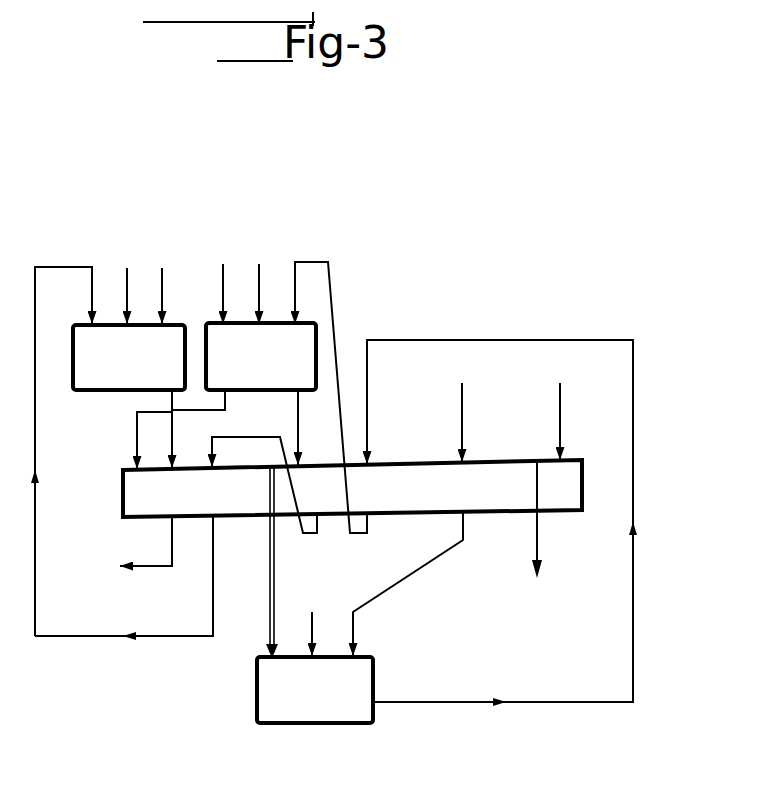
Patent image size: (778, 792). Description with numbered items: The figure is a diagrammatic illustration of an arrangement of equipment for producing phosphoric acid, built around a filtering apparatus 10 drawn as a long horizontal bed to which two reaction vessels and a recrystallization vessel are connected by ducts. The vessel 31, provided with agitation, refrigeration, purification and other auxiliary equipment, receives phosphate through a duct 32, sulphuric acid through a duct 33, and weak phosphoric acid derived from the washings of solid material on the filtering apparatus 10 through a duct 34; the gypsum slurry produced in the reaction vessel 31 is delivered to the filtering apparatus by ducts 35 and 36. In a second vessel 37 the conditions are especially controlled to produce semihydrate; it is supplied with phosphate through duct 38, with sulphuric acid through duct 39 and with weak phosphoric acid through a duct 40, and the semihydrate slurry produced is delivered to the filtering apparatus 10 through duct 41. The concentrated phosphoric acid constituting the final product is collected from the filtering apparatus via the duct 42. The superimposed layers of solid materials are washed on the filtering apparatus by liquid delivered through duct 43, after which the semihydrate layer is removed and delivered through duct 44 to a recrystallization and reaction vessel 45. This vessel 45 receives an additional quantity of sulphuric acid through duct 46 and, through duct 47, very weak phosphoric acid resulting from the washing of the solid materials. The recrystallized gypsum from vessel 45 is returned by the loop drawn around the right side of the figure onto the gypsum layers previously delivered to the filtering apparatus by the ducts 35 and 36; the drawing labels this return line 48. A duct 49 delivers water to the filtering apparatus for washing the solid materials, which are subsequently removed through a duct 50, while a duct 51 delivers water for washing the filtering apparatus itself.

The filtering apparatus 10 is at (123, 497).
The vessel 31 is at (278, 368).
The duct 32 is at (223, 272).
The duct 33 is at (259, 272).
The duct 34 is at (310, 262).
The duct 35 is at (137, 432).
The duct 36 is at (300, 440).
The vessel 37 is at (143, 370).
The duct 38 is at (125, 270).
The duct 39 is at (162, 270).
The duct 40 is at (54, 267).
The duct 41 is at (183, 447).
The duct 42 is at (172, 547).
The duct 43 is at (220, 437).
The duct 44 is at (270, 622).
The recrystallization and reaction vessel 45 is at (278, 700).
The duct 46 is at (312, 626).
The duct 47 is at (353, 624).
The feedback line 48 is at (367, 425).
The duct 49 is at (462, 416).
The duct 50 is at (540, 540).
The duct 51 is at (560, 414).